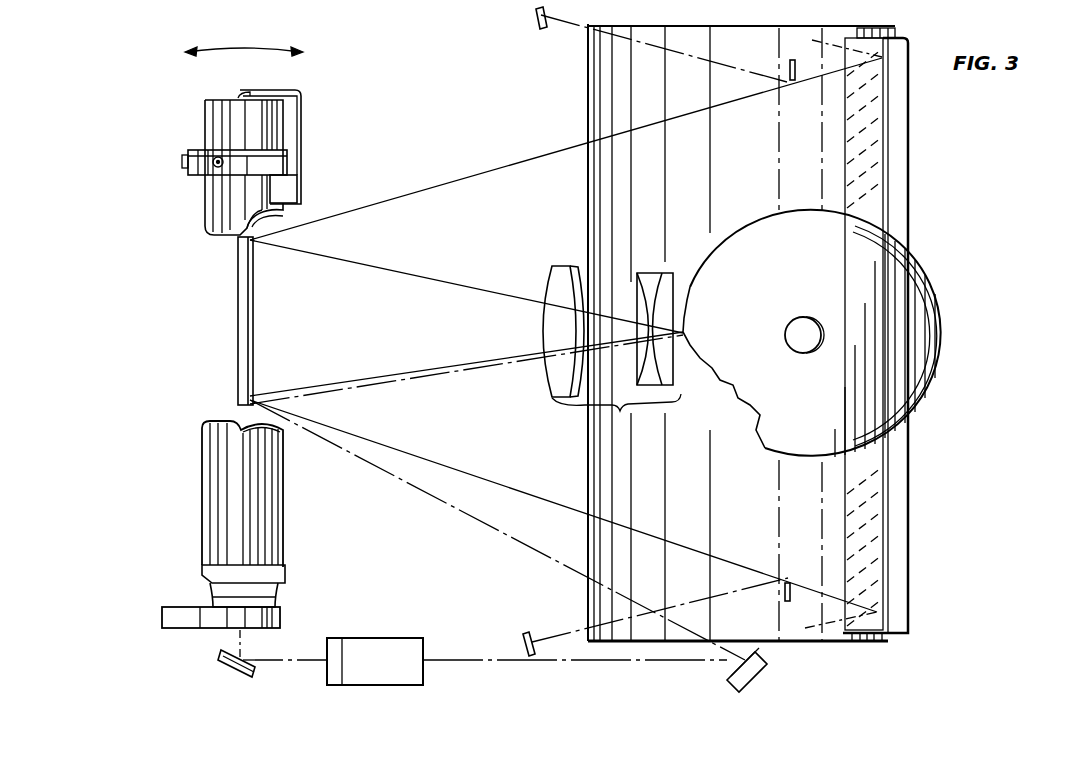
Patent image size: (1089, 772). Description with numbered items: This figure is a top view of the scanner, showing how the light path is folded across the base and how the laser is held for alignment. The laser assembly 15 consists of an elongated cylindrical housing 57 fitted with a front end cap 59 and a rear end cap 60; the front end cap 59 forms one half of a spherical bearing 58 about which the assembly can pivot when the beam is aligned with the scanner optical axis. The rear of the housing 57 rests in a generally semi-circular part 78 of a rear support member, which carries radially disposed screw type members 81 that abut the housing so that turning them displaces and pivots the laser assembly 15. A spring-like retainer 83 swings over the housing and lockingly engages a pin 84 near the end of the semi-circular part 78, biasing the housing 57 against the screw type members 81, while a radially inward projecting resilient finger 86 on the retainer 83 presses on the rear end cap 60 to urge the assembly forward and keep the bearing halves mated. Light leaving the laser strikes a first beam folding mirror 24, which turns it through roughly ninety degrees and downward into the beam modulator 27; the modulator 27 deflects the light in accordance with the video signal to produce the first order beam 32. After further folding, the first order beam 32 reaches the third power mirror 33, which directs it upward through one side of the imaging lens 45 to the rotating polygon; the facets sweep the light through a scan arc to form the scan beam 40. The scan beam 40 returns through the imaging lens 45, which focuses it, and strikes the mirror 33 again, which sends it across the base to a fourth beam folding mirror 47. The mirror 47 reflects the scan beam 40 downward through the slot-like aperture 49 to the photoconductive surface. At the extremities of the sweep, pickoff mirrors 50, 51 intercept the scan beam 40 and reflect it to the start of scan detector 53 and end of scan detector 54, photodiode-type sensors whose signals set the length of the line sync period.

The laser assembly 15 is at (234, 524).
The first beam folding mirror 24 is at (224, 662).
The beam modulator 27 is at (402, 645).
The first order beam 32 is at (598, 662).
The third power mirror 33 is at (245, 289).
The scan beam 40 is at (440, 368).
The imaging lens 45 is at (612, 351).
The fourth beam folding mirror 47 is at (893, 517).
The slot-like aperture 49 is at (852, 509).
The pickoff mirror 50 is at (791, 62).
The pickoff mirror 51 is at (788, 603).
The start of scan detector 53 is at (542, 27).
The end of scan detector 54 is at (532, 634).
The cylindrical housing 57 is at (208, 548).
The spherical bearing 58 is at (326, 609).
The front end cap 59 is at (282, 573).
The rear end cap 60 is at (253, 141).
The semi-circular part 78 is at (245, 156).
The screw type members 81 is at (188, 168).
The spring-like retainer 83 is at (298, 190).
The pin 84 is at (270, 196).
The resilient finger 86 is at (302, 132).